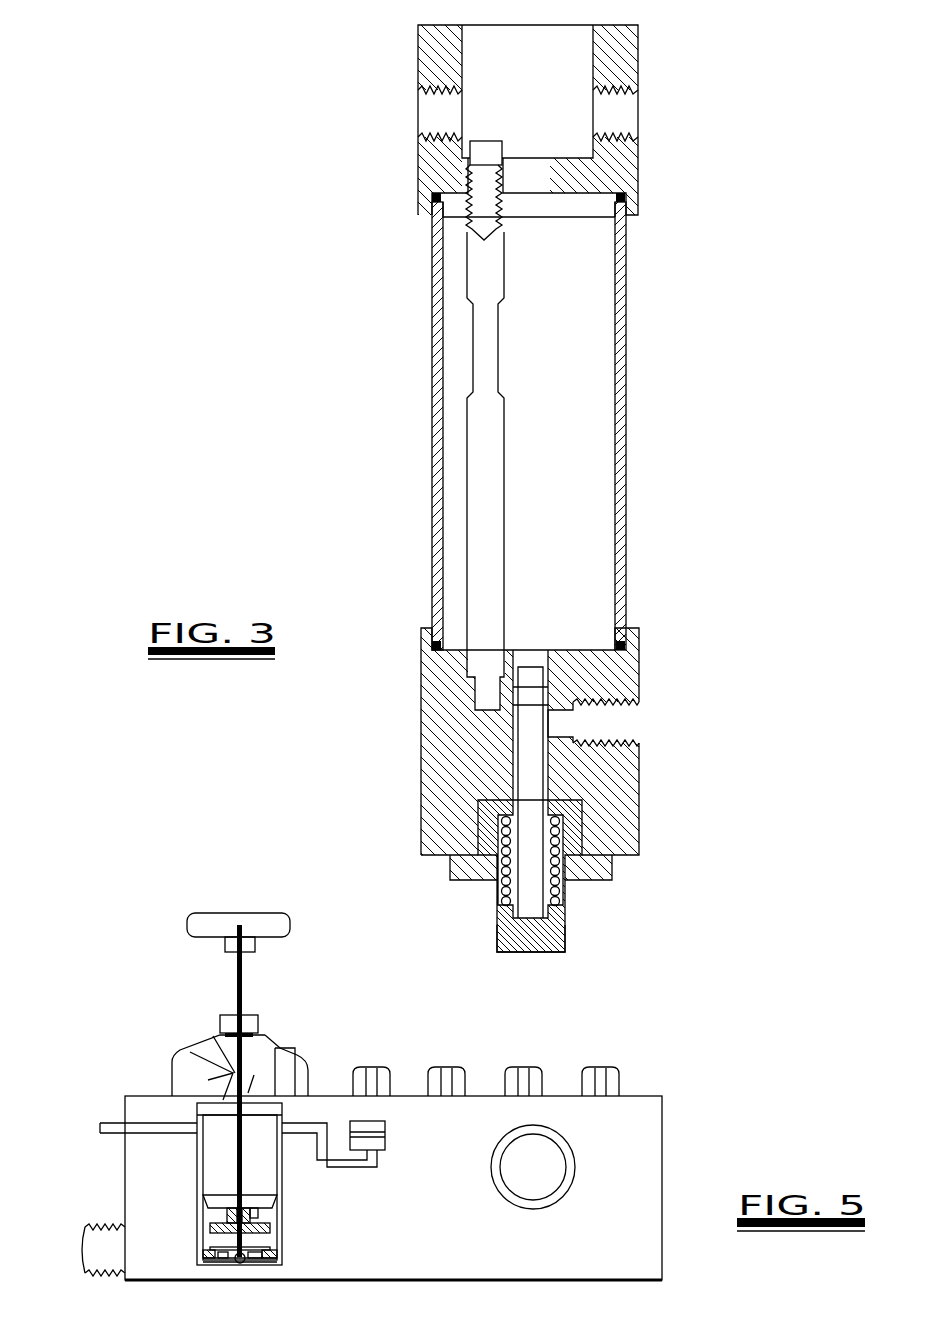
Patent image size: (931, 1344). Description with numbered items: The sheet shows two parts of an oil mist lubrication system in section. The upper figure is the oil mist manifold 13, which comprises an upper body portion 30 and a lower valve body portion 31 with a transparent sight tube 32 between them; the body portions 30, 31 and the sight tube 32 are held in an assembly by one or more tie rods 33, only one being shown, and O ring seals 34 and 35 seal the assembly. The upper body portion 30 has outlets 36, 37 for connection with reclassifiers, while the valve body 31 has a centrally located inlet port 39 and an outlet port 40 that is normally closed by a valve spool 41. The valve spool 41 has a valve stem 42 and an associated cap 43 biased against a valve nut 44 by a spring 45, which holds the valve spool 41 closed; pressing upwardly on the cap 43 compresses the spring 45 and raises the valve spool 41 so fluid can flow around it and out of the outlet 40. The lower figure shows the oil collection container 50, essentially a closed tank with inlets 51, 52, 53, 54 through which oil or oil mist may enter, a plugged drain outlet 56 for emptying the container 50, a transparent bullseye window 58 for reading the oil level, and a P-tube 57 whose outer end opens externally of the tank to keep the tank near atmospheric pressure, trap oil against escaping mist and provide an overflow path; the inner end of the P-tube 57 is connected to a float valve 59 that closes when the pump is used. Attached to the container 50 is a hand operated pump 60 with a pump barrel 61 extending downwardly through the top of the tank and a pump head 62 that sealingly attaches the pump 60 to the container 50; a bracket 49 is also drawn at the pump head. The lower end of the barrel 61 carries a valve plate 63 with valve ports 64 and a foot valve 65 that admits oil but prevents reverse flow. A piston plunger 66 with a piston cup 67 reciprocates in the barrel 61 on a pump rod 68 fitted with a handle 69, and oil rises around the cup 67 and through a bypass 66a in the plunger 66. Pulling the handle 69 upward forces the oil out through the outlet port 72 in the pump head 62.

In FIG. 3, the oil mist manifold 13 is at (648, 402).
In FIG. 3, the upper body portion 30 is at (612, 67).
In FIG. 3, the lower valve body portion 31 is at (450, 775).
In FIG. 3, the transparent sight tube 32 is at (622, 520).
In FIG. 3, the tie rod 33 is at (490, 512).
In FIG. 3, the O ring seal 34 is at (433, 212).
In FIG. 3, the O ring seal 35 is at (433, 642).
In FIG. 3, the outlet 36 is at (620, 122).
In FIG. 3, the outlet 37 is at (440, 125).
In FIG. 3, the inlet port 39 is at (548, 667).
In FIG. 3, the outlet port 40 is at (561, 725).
In FIG. 3, the valve spool 41 is at (538, 770).
In FIG. 3, the valve stem 42 is at (530, 910).
In FIG. 3, the valve stem cap 43 is at (565, 945).
In FIG. 3, the valve nut 44 is at (613, 868).
In FIG. 3, the spring 45 is at (515, 840).
In FIG. 5, the bracket 49 is at (285, 1058).
In FIG. 5, the collection container 50 is at (642, 1151).
In FIG. 5, the inlet 51 is at (605, 1070).
In FIG. 5, the inlet 52 is at (525, 1068).
In FIG. 5, the inlet 53 is at (447, 1068).
In FIG. 5, the inlet 54 is at (370, 1070).
In FIG. 5, the plugged drain outlet 56 is at (95, 1252).
In FIG. 5, the P-tube 57 is at (368, 1165).
In FIG. 5, the transparent window 58 is at (540, 1208).
In FIG. 5, the float valve 59 is at (386, 1135).
In FIG. 5, the hand operated pump 60 is at (188, 1028).
In FIG. 5, the pump barrel 61 is at (198, 1162).
In FIG. 5, the pump head 62 is at (268, 1046).
In FIG. 5, the valve plate 63 is at (268, 1262).
In FIG. 5, the valve ports 64 is at (252, 1262).
In FIG. 5, the foot valve 65 is at (232, 1250).
In FIG. 5, the piston plunger 66 is at (210, 1228).
In FIG. 5, the bypass 66a is at (258, 1218).
In FIG. 5, the piston cup 67 is at (205, 1208).
In FIG. 5, the pump rod 68 is at (242, 1167).
In FIG. 5, the handle 69 is at (227, 920).
In FIG. 5, the outlet port 72 is at (228, 1088).